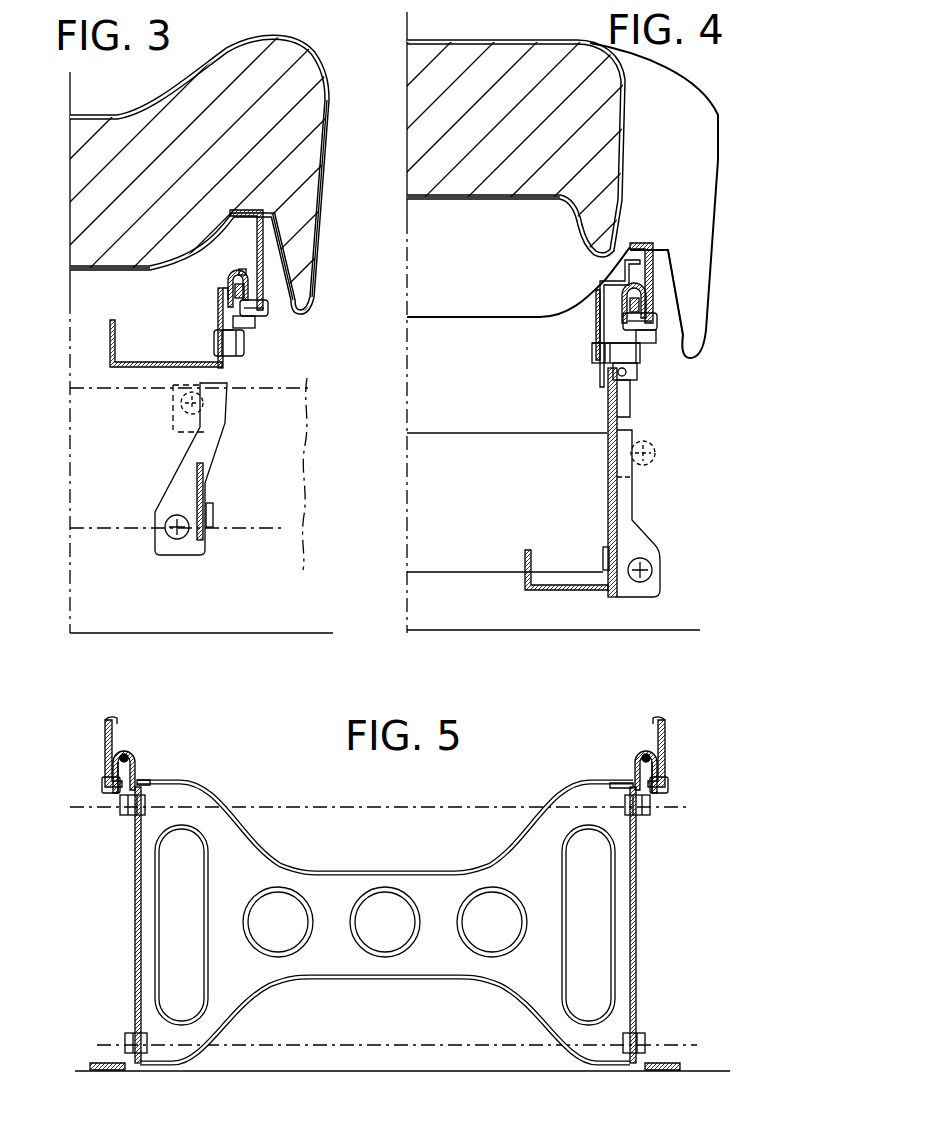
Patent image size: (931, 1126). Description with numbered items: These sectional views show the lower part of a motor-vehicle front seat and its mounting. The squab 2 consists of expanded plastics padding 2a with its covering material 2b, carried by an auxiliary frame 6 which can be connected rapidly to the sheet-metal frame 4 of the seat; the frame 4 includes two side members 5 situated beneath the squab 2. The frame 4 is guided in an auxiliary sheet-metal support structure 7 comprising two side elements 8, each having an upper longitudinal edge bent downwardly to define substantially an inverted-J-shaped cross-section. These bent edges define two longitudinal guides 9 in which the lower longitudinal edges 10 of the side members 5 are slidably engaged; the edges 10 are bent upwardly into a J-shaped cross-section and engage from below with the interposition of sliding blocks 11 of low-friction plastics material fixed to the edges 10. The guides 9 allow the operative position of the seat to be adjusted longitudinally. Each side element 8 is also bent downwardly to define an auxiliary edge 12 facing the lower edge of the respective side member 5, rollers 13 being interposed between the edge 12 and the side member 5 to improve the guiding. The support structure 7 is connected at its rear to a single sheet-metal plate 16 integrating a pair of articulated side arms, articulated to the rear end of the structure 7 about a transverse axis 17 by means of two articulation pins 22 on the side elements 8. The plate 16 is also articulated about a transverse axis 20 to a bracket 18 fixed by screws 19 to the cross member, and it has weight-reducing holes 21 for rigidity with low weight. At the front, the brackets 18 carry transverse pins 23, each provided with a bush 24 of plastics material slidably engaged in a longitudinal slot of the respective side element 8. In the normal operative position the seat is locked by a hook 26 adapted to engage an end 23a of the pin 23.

In FIG. 3, the squab 2 is at (323, 150).
In FIG. 4, the squab 2 is at (628, 137).
In FIG. 3, the expanded plastics padding 2a is at (288, 113).
In FIG. 4, the expanded plastics padding 2a is at (472, 68).
In FIG. 3, the covering material 2b is at (323, 58).
In FIG. 4, the covering material 2b is at (581, 42).
In FIG. 3, the sheet-metal frame 4 is at (266, 250).
In FIG. 4, the sheet-metal frame 4 is at (660, 270).
In FIG. 3, the side members 5 is at (257, 240).
In FIG. 4, the side members 5 is at (650, 247).
In FIG. 5, the side members 5 is at (105, 736).
In FIG. 3, the auxiliary frame 6 is at (95, 272).
In FIG. 4, the auxiliary frame 6 is at (453, 200).
In FIG. 3, the auxiliary sheet-metal support structure 7 is at (268, 328).
In FIG. 3, the side elements 8 is at (218, 295).
In FIG. 4, the side elements 8 is at (620, 300).
In FIG. 5, the side elements 8 is at (143, 768).
In FIG. 3, the longitudinal guides 9 is at (228, 278).
In FIG. 4, the longitudinal guides 9 is at (652, 288).
In FIG. 5, the longitudinal guides 9 is at (136, 757).
In FIG. 3, the lower longitudinal edges 10 is at (247, 292).
In FIG. 4, the lower longitudinal edges 10 is at (648, 295).
In FIG. 3, the sliding blocks 11 is at (237, 273).
In FIG. 4, the sliding blocks 11 is at (623, 258).
In FIG. 3, the auxiliary edge 12 is at (246, 330).
In FIG. 4, the auxiliary edge 12 is at (645, 340).
In FIG. 5, the auxiliary edge 12 is at (110, 812).
In FIG. 3, the rollers 13 is at (268, 312).
In FIG. 4, the rollers 13 is at (652, 327).
In FIG. 5, the rollers 13 is at (102, 785).
In FIG. 3, the sheet-metal plate 16 is at (140, 360).
In FIG. 4, the sheet-metal plate 16 is at (566, 570).
In FIG. 5, the sheet-metal plate 16 is at (430, 985).
In FIG. 5, the transverse axis 17 is at (368, 805).
In FIG. 3, the bracket 18 is at (205, 446).
In FIG. 4, the bracket 18 is at (618, 507).
In FIG. 3, the screws 19 is at (175, 410).
In FIG. 4, the screws 19 is at (648, 450).
In FIG. 5, the transverse axis 20 is at (668, 1045).
In FIG. 5, the weight-reducing holes 21 is at (270, 898).
In FIG. 3, the articulation pins 22 is at (220, 342).
In FIG. 5, the articulation pins 22 is at (150, 800).
In FIG. 4, the transverse pins 23 is at (612, 357).
In FIG. 4, the end of pin 23a is at (592, 362).
In FIG. 4, the bush 24 is at (638, 374).
In FIG. 4, the hook 26 is at (588, 370).